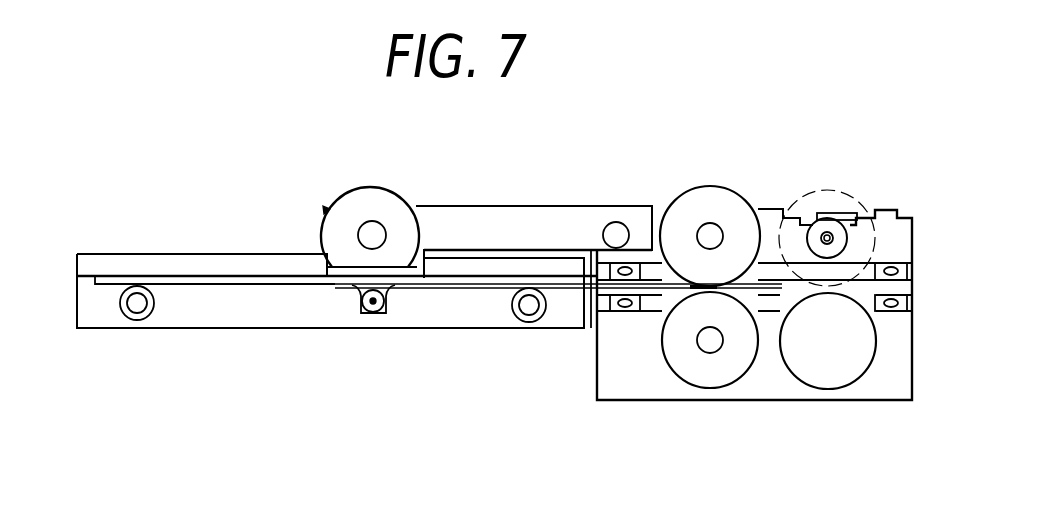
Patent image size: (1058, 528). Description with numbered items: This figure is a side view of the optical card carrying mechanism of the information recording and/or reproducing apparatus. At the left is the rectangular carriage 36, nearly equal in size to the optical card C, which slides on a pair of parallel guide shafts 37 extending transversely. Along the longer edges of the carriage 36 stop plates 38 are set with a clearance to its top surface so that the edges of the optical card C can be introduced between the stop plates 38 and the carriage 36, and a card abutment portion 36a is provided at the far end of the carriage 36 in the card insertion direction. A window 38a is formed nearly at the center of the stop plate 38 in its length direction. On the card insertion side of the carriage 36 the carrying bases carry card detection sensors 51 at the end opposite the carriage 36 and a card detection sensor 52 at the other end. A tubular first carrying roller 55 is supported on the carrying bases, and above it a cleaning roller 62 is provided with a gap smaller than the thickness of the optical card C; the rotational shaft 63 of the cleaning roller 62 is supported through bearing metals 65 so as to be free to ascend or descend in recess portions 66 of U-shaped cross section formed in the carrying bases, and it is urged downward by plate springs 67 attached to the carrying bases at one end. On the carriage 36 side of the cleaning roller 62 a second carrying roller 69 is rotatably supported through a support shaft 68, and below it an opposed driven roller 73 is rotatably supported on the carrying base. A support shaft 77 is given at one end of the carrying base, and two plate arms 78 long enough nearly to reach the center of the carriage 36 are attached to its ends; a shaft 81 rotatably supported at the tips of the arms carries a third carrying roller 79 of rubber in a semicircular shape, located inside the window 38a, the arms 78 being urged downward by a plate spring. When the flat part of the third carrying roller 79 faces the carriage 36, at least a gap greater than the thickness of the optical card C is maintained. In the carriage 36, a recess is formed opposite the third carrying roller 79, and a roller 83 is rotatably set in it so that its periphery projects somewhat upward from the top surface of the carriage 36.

The carriage 36 is at (243, 308).
The card abutment portion 36a is at (86, 283).
The guide shafts 37 is at (137, 308).
The stop plates 38 is at (162, 258).
The window 38a is at (330, 270).
The card detection sensors 51 is at (898, 312).
The card detection sensor 52 is at (615, 309).
The first carrying roller 55 is at (828, 373).
The cleaning roller 62 is at (792, 204).
The rotational shaft 63 is at (826, 232).
The bearing metals 65 is at (838, 217).
The recess portions 66 is at (806, 222).
The plate springs 67 is at (851, 217).
The support shaft 68 is at (705, 233).
The second carrying roller 69 is at (710, 188).
The driven roller 73 is at (697, 370).
The support shaft 77 is at (614, 222).
The plate arms 78 is at (477, 221).
The third carrying roller 79 is at (347, 215).
The shaft 81 is at (375, 222).
The roller 83 is at (367, 314).
The optical card C is at (770, 292).